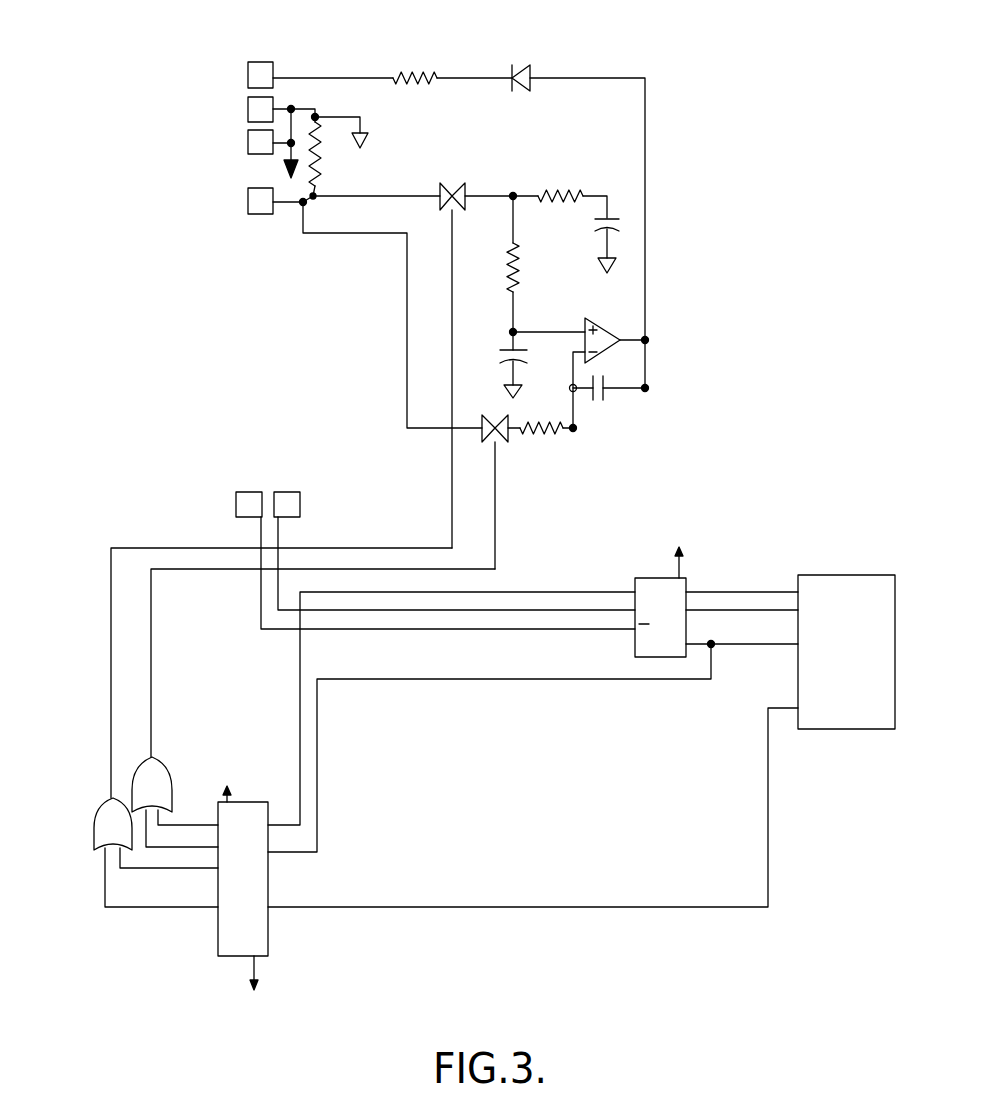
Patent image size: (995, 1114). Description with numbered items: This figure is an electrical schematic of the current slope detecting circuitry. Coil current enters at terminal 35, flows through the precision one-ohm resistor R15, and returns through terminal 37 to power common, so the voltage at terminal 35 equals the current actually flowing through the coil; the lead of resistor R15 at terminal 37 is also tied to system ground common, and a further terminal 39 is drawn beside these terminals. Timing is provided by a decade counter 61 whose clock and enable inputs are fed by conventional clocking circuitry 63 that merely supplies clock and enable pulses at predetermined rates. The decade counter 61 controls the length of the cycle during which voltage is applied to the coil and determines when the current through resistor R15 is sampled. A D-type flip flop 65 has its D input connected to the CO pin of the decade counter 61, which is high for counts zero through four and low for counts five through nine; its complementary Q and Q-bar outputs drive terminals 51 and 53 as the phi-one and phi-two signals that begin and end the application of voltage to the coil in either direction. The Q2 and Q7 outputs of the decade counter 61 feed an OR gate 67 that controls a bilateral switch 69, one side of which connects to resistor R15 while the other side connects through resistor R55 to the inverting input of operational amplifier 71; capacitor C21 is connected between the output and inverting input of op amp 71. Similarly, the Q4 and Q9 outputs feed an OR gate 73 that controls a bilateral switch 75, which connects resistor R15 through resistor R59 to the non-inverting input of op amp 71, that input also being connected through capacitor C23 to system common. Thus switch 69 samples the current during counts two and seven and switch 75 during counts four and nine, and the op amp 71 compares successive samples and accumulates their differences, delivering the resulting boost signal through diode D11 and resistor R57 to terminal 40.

The terminal 40 is at (249, 62).
The input terminal 39 is at (248, 115).
The terminal 37 is at (248, 147).
The terminal 35 is at (248, 203).
The resistor R15 is at (322, 160).
The resistor R57 is at (437, 48).
The diode D11 is at (517, 64).
The bilateral switch 75 is at (452, 183).
The resistor R59 is at (519, 260).
The capacitor C23 is at (510, 332).
The operational amplifier 71 is at (599, 331).
The capacitor C21 is at (600, 378).
The resistor R55 is at (550, 433).
The bilateral switch 69 is at (498, 443).
The terminal 51 is at (237, 495).
The terminal 53 is at (306, 485).
The D-type flip flop 65 is at (635, 646).
The clocking circuitry 63 is at (858, 729).
The OR gate 67 is at (167, 772).
The OR gate 73 is at (93, 827).
The decade counter 61 is at (270, 884).